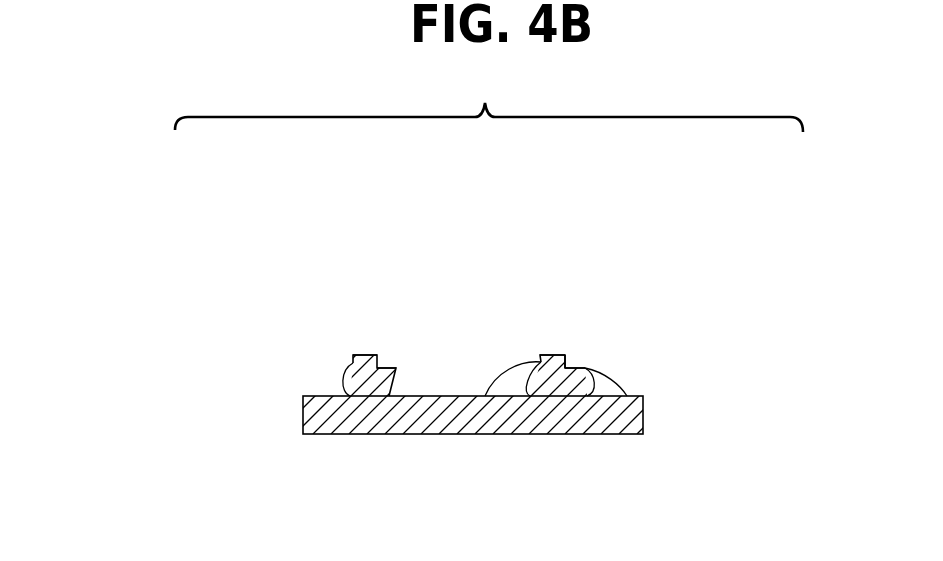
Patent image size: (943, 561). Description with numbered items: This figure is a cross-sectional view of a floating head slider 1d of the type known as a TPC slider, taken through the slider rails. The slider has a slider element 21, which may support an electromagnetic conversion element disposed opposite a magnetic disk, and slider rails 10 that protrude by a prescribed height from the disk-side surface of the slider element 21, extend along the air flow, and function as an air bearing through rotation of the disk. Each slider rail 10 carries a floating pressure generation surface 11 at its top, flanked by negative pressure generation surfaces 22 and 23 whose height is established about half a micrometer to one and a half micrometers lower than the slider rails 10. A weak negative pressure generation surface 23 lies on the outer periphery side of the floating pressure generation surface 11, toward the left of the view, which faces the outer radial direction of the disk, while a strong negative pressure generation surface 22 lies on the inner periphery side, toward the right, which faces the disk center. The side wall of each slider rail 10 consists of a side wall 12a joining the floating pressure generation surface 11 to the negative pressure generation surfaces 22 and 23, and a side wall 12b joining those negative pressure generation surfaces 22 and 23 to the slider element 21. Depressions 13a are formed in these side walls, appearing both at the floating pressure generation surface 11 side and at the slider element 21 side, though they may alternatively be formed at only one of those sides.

The floating head slider 1d is at (506, 97).
The slider rail 10 is at (356, 354).
The floating pressure generation surface 11 is at (353, 355).
The side wall 12a is at (570, 357).
The side wall 12b is at (598, 398).
The depression 13a is at (352, 360).
The slider element 21 is at (430, 396).
The strong negative pressure generation surface 22 is at (392, 369).
The weak negative pressure generation surface 23 is at (345, 378).